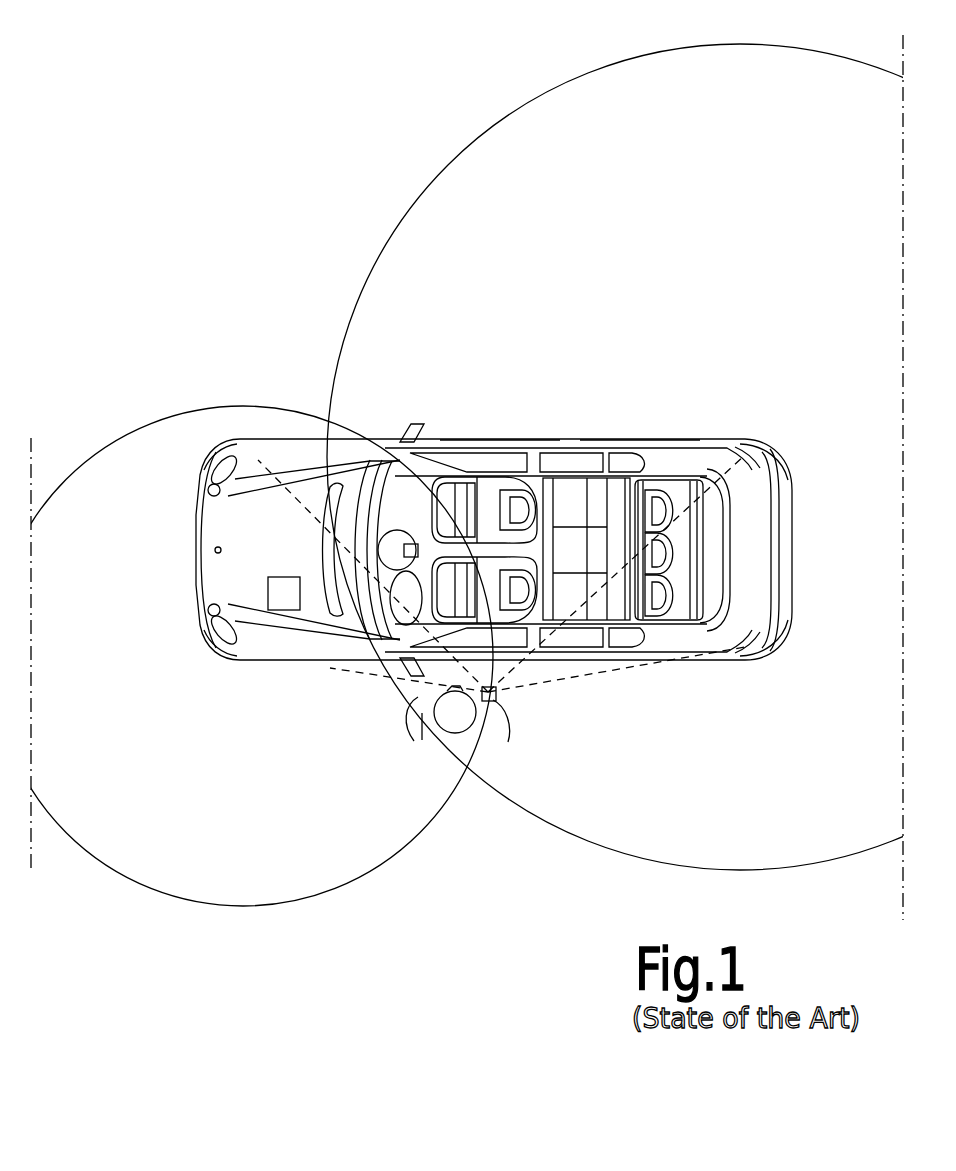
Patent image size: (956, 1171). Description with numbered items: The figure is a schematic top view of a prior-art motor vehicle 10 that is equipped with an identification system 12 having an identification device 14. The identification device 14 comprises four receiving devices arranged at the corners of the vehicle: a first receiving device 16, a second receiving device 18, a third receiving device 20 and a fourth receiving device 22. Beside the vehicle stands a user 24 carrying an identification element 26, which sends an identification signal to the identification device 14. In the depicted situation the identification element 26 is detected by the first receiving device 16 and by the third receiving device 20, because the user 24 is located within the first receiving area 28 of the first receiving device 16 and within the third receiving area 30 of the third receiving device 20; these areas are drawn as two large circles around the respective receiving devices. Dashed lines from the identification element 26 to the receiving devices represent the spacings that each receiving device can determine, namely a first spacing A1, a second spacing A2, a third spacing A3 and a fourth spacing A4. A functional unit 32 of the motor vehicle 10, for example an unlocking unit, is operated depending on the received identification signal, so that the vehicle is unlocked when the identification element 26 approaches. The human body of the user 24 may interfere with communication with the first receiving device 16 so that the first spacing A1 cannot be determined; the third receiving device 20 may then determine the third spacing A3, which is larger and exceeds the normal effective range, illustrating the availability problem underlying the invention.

The motor vehicle 10 is at (793, 550).
The identification system 12 is at (502, 416).
The identification device 14 is at (629, 393).
The first receiving device 16 is at (245, 658).
The second receiving device 18 is at (245, 440).
The third receiving device 20 is at (745, 455).
The fourth receiving device 22 is at (743, 652).
The user 24 is at (425, 716).
The identification element 26 is at (489, 706).
The first receiving area 28 is at (175, 730).
The third receiving area 30 is at (740, 770).
The functional unit 32 is at (285, 577).
The first spacing A1 is at (355, 668).
The second spacing A2 is at (303, 500).
The third spacing A3 is at (681, 447).
The fourth spacing A4 is at (568, 678).